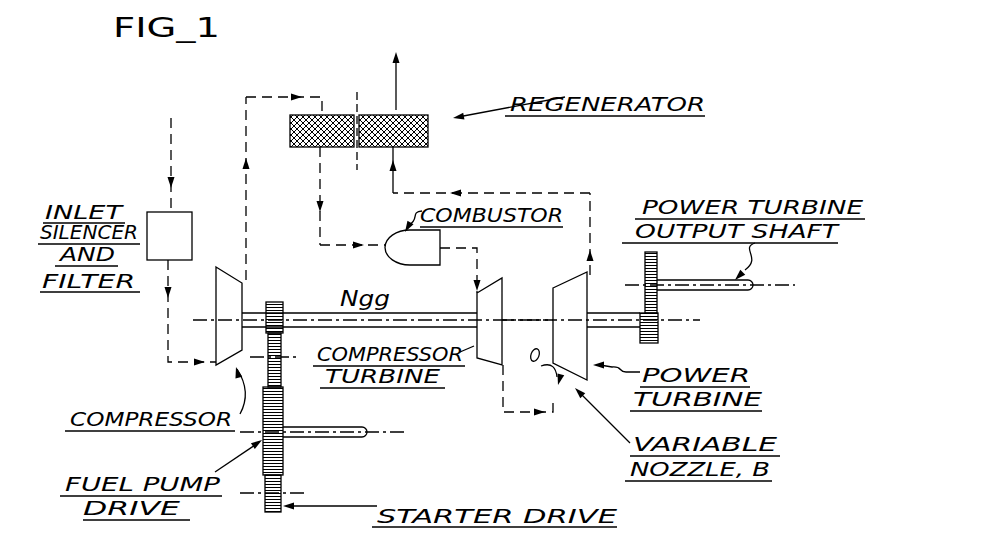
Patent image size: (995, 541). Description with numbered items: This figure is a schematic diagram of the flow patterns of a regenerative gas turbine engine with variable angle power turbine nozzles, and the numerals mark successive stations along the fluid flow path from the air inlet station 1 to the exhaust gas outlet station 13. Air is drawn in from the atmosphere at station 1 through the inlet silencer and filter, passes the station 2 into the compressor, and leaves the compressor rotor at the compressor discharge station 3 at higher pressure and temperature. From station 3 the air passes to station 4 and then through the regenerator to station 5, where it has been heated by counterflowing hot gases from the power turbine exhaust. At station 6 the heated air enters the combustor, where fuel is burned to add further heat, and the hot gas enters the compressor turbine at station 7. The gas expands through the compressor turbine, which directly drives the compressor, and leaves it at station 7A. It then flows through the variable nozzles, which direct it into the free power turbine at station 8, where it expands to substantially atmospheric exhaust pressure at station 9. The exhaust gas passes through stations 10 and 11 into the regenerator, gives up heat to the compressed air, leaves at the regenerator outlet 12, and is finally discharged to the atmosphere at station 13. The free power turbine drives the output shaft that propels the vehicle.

The air inlet station 1 is at (151, 165).
The flow station 2 is at (191, 329).
The compressor discharge station 3 is at (230, 188).
The regenerator air inlet station 4 is at (284, 89).
The regenerator air outlet station 5 is at (302, 196).
The combustor inlet station 6 is at (352, 229).
The compressor turbine inlet station 7 is at (476, 262).
The compressor turbine outlet station 7A is at (505, 356).
The power turbine inlet station 8 is at (533, 382).
The power turbine exhaust station 9 is at (572, 235).
The flow station 10 is at (491, 179).
The flow station 11 is at (412, 170).
The regenerator outlet 12 is at (418, 85).
The exhaust gas outlet station 13 is at (418, 55).